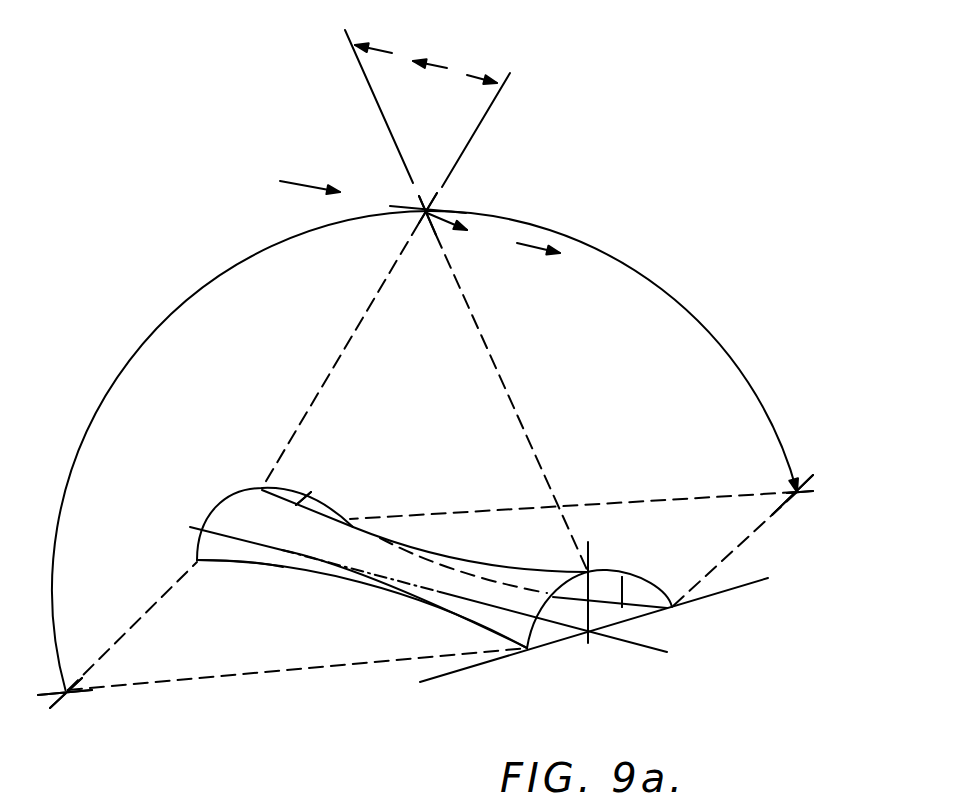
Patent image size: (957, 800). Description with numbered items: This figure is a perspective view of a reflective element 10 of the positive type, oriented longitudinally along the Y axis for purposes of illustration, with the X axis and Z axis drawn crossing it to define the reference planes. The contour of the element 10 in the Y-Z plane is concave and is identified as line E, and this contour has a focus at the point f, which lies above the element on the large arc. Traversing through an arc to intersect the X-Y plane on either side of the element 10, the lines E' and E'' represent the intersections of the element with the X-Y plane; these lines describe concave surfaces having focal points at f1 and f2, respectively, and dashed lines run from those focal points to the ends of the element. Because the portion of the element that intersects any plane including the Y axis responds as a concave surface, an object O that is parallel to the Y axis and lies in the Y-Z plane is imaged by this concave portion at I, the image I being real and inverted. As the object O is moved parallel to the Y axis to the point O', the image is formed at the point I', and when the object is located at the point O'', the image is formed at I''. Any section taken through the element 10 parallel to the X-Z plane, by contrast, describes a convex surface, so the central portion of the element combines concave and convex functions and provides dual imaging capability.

The reflective element 10 is at (229, 503).
The line E is at (329, 484).
The line E' is at (240, 585).
The line E'' is at (651, 573).
The focus point f is at (430, 210).
The focal point f1 is at (65, 717).
The focal point f2 is at (806, 479).
The object O is at (432, 53).
The object position O' is at (373, 62).
The object position O'' is at (477, 93).
The image I is at (438, 235).
The image point I' is at (538, 263).
The image point I'' is at (309, 203).
The X axis X is at (604, 626).
The Y axis Y is at (438, 598).
The Z axis Z is at (590, 548).